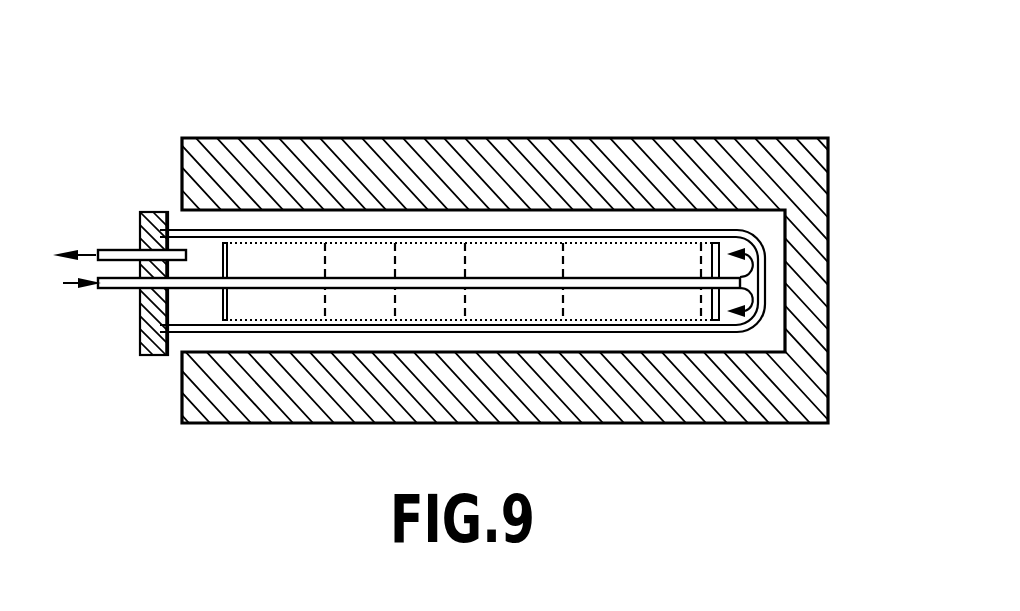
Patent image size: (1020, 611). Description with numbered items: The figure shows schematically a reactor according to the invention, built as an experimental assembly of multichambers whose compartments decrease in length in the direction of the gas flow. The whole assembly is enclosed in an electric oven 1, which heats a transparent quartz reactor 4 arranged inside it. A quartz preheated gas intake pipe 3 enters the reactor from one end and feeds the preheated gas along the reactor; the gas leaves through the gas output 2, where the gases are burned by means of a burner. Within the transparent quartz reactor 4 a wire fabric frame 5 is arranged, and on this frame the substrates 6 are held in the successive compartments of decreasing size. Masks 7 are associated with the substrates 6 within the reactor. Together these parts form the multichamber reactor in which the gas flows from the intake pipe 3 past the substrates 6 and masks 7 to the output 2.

The electric oven 1 is at (480, 138).
The gas output 2 is at (112, 248).
The quartz preheated gas intake pipe 3 is at (120, 292).
The transparent quartz reactor 4 is at (142, 356).
The wire fabric frame 5 is at (248, 320).
The substrates 6 is at (322, 296).
The masks 7 is at (217, 265).